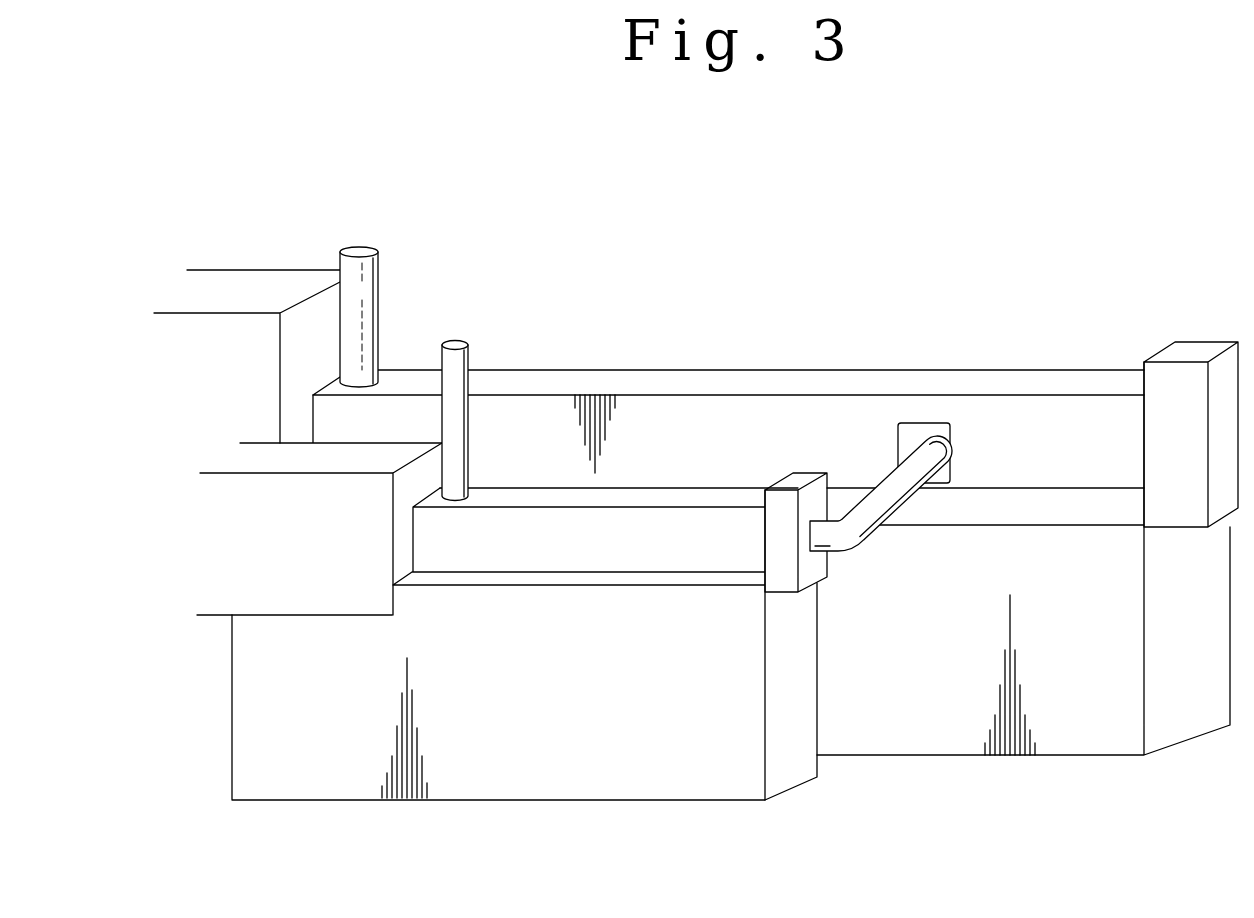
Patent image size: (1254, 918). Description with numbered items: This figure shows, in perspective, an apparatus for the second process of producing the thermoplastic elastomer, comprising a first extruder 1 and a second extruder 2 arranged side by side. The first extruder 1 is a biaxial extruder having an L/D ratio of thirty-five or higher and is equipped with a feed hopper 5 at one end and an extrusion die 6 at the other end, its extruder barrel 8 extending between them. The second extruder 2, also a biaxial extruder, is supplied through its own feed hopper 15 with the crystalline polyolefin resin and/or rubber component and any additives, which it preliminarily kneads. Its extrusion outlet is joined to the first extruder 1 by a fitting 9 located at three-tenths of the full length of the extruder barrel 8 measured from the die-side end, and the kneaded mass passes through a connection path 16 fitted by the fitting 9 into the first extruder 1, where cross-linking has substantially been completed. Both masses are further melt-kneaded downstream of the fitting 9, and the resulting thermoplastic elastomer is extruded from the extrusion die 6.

The first extruder 1 is at (741, 415).
The second extruder 2 is at (553, 543).
The feed hopper 5 is at (383, 278).
The extrusion die 6 is at (1185, 387).
The extruder barrel 8 is at (835, 383).
The fitting 9 is at (932, 420).
The feed hopper 15 is at (470, 355).
The connection path 16 is at (885, 488).